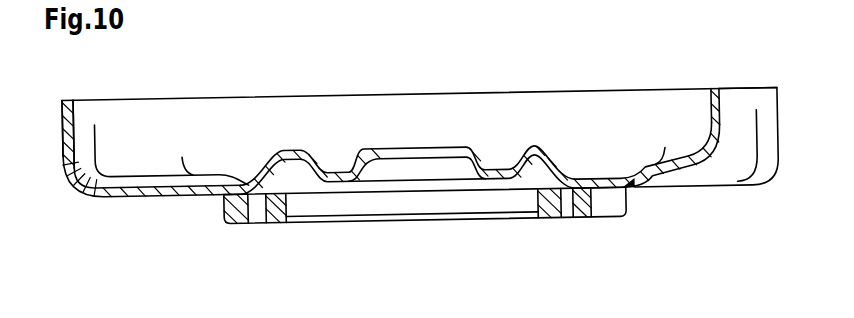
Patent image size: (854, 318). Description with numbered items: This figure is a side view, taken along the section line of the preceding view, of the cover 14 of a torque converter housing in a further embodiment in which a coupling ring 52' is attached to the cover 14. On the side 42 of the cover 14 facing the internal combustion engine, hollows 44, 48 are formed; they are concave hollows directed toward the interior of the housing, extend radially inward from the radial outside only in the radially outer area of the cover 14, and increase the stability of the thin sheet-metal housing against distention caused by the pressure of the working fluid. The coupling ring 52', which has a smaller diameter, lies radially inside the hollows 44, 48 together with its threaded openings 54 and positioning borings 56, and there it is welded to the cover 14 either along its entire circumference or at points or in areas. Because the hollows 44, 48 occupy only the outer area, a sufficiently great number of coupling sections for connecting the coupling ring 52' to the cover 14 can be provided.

The cover 14 is at (602, 93).
The side of the cover facing the internal combustion engine 42 is at (657, 200).
The hollow 44 is at (165, 171).
The hollow 48 is at (697, 183).
The coupling ring 52' is at (426, 244).
The threaded opening 54 is at (250, 220).
The positioning boring 56 is at (570, 220).